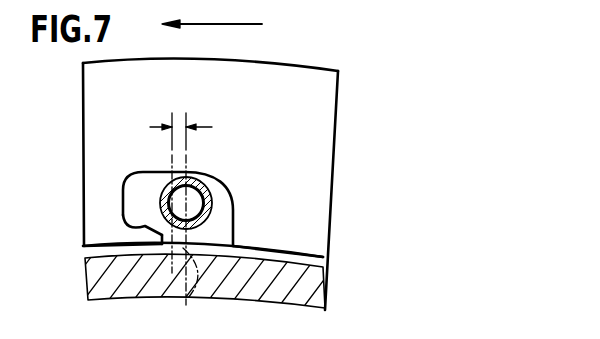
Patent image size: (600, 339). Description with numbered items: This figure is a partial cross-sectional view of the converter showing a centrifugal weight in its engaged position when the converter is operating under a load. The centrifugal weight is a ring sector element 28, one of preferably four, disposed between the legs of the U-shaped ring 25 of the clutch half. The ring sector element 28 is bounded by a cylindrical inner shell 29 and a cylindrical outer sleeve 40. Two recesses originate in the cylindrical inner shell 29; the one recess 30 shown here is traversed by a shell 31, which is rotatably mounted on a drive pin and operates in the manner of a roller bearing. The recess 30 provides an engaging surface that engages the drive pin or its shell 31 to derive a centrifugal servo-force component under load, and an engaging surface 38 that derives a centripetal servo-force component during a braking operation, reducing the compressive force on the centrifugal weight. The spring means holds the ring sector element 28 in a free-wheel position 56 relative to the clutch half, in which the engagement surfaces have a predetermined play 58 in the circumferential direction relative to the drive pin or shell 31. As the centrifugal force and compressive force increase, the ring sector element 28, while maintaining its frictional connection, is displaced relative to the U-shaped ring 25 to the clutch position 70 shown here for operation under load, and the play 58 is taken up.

The U-shaped ring 25 is at (112, 300).
The ring sector element 28 is at (310, 221).
The cylindrical inner shell 29 is at (260, 250).
The recess 30 is at (135, 190).
The shell 31 is at (212, 215).
The engaging surface 38 is at (145, 224).
The cylindrical outer sleeve 40 is at (281, 62).
The free-wheel position 56 is at (185, 243).
The predetermined play 58 is at (176, 125).
The clutch position 70 is at (171, 138).